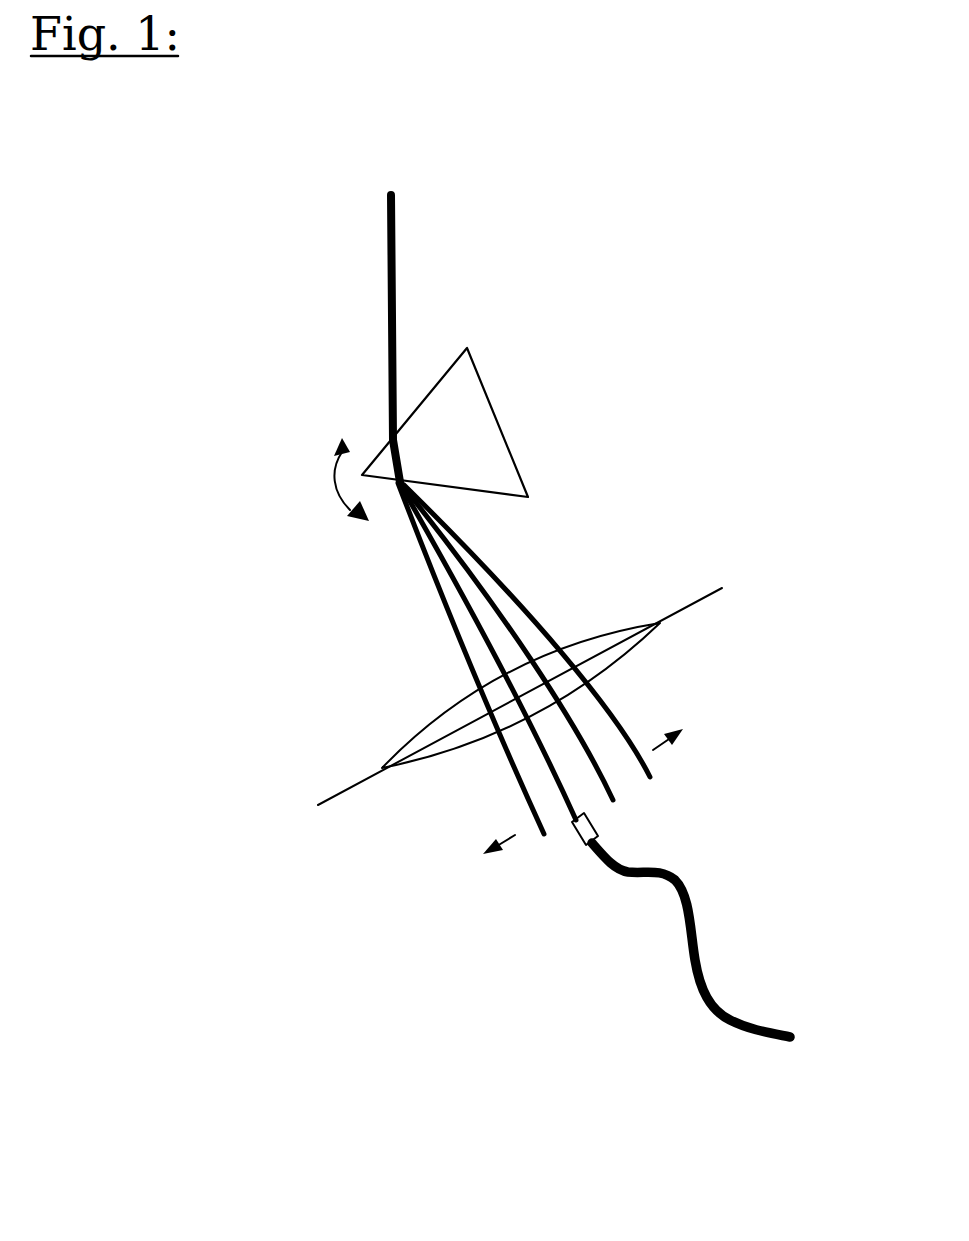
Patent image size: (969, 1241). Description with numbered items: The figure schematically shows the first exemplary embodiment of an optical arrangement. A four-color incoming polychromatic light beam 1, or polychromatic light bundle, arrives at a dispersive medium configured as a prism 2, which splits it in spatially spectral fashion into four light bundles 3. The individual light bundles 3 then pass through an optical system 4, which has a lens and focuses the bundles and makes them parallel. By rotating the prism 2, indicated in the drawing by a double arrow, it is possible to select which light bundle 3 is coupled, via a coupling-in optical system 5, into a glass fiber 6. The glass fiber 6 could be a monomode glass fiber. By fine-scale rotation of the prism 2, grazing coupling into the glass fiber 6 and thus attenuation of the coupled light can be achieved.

The incoming polychromatic light beam 1 is at (397, 290).
The prism 2 is at (470, 447).
The light bundles 3 is at (485, 612).
The optical system 4 is at (596, 666).
The coupling-in optical system 5 is at (600, 834).
The glass fiber 6 is at (703, 980).